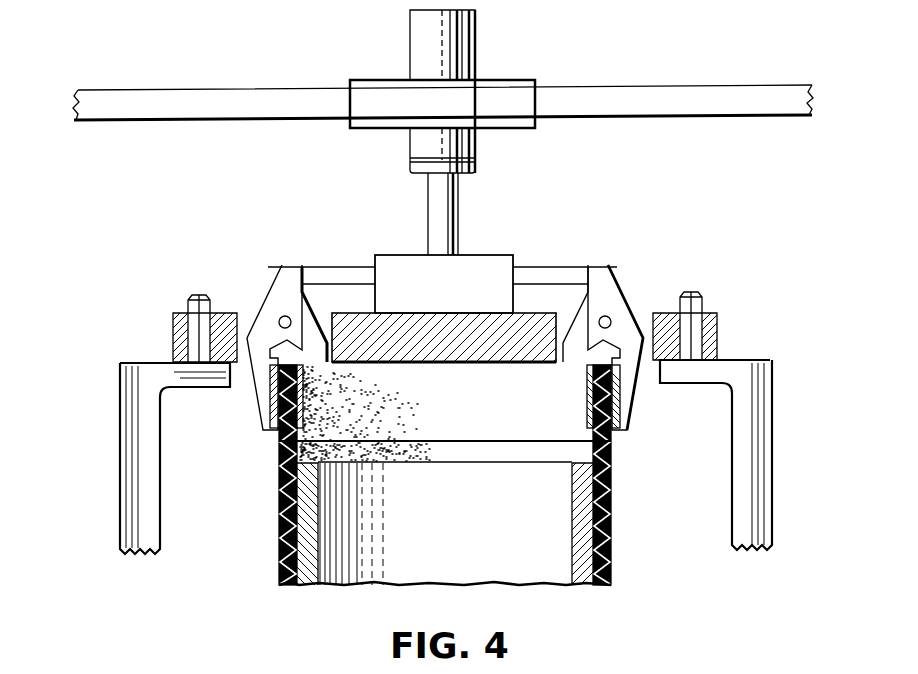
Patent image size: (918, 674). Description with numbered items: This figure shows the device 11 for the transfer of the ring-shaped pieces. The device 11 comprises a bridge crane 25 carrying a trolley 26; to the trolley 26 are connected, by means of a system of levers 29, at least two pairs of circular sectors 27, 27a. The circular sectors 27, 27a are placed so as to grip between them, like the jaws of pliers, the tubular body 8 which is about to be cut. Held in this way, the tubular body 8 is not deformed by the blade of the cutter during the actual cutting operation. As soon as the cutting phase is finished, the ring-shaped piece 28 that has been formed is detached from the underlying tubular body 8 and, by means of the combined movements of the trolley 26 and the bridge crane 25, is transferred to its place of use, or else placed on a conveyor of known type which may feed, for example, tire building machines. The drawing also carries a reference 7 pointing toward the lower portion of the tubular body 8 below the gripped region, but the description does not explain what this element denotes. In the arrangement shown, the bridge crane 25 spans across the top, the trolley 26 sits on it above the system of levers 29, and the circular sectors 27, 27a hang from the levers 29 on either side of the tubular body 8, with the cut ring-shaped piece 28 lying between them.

The bridge crane 25 is at (236, 97).
The trolley 26 is at (507, 95).
The system of levers 29 is at (403, 265).
The device for the transfer of the ring-shaped pieces 11 is at (553, 258).
The circular sector 27 is at (268, 413).
The circular sector 27a is at (303, 405).
The ring-shaped piece 28 is at (468, 423).
The container interior 7 is at (525, 570).
The tubular body 8 is at (611, 560).